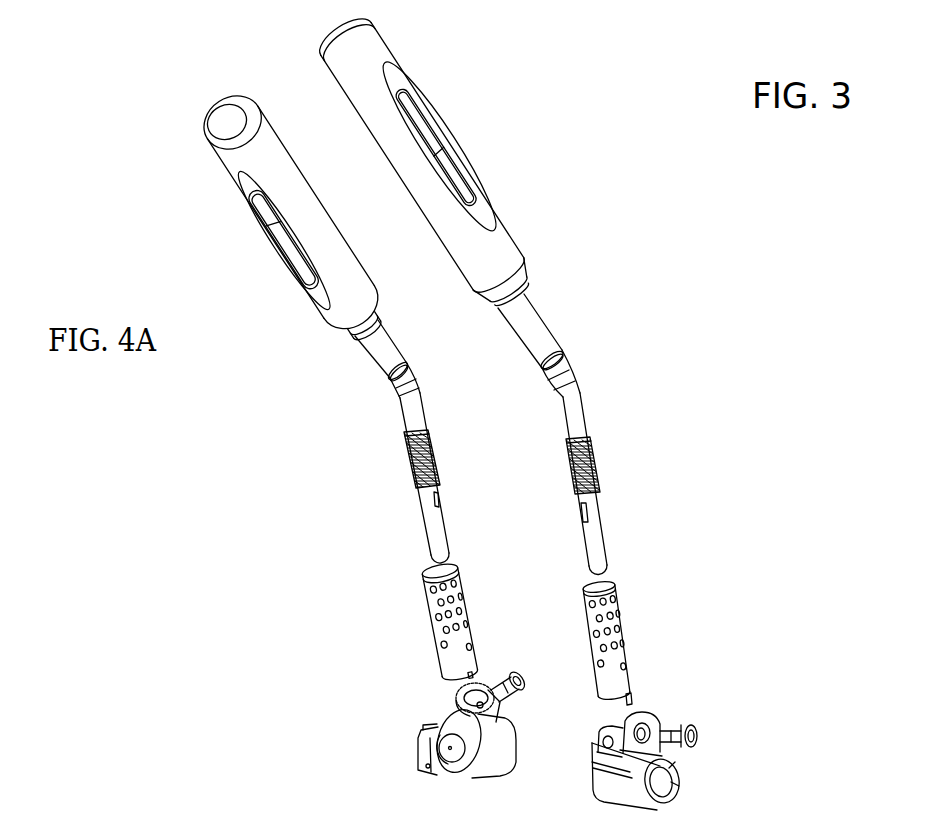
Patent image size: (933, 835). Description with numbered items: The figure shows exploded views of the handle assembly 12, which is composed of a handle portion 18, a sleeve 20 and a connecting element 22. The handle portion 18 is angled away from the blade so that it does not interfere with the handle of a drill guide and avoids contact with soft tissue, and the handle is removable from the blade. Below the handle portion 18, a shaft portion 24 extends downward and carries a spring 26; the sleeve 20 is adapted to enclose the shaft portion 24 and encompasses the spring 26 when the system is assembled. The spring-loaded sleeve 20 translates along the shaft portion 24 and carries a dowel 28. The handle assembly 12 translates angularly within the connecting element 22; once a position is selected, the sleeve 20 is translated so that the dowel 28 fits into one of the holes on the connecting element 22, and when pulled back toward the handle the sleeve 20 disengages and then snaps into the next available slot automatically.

In FIG. 3, the handle assembly 12 is at (691, 345).
In FIG. 3, the handle portion 18 is at (497, 210).
In FIG. 3, the sleeve 20 is at (633, 633).
In FIG. 4A, the sleeve 20 is at (425, 612).
In FIG. 3, the connecting element 22 is at (680, 792).
In FIG. 4A, the connecting element 22 is at (410, 728).
In FIG. 3, the shaft portion 24 is at (607, 537).
In FIG. 3, the spring 26 is at (598, 463).
In FIG. 3, the dowel 28 is at (633, 693).